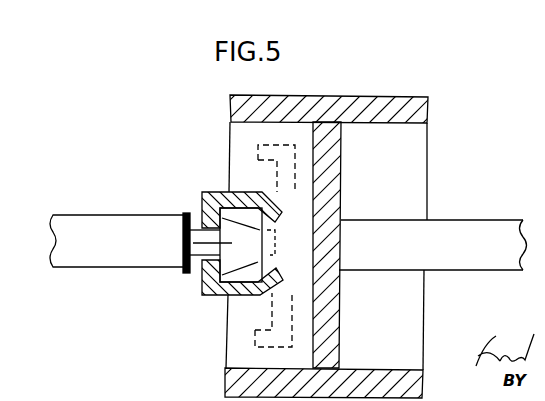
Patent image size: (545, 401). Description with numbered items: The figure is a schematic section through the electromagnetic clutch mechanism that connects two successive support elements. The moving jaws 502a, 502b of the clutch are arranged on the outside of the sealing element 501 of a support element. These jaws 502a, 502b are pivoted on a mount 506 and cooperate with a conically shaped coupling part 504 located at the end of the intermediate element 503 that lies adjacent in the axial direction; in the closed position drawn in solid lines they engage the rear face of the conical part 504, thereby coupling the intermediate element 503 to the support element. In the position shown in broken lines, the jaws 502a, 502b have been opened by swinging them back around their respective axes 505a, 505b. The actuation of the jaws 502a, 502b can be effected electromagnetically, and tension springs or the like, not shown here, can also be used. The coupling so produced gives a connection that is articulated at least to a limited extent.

The sealing element 501 is at (342, 164).
The moving jaw 502a is at (215, 192).
The moving jaw 502b is at (215, 296).
The intermediate element 503 is at (88, 224).
The conically shaped coupling part 504 is at (182, 252).
The axis 505a is at (265, 200).
The axis 505b is at (270, 284).
The mount 506 is at (292, 228).